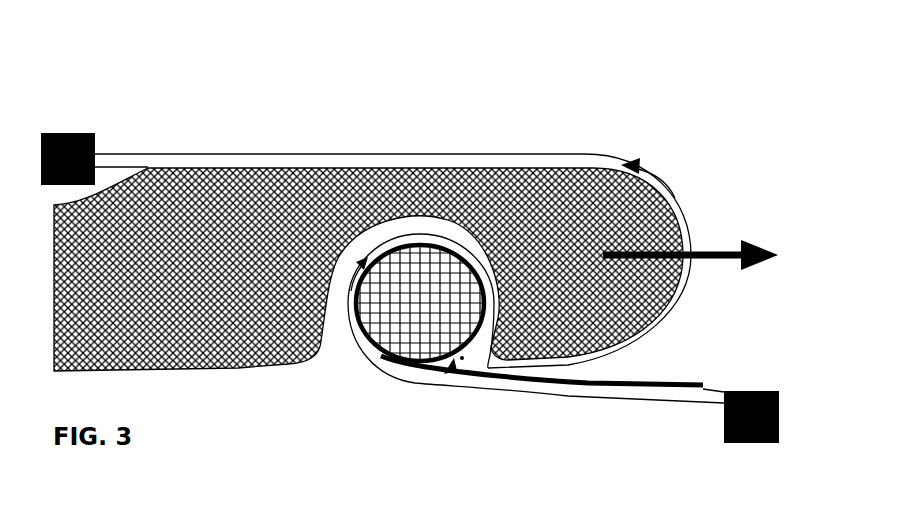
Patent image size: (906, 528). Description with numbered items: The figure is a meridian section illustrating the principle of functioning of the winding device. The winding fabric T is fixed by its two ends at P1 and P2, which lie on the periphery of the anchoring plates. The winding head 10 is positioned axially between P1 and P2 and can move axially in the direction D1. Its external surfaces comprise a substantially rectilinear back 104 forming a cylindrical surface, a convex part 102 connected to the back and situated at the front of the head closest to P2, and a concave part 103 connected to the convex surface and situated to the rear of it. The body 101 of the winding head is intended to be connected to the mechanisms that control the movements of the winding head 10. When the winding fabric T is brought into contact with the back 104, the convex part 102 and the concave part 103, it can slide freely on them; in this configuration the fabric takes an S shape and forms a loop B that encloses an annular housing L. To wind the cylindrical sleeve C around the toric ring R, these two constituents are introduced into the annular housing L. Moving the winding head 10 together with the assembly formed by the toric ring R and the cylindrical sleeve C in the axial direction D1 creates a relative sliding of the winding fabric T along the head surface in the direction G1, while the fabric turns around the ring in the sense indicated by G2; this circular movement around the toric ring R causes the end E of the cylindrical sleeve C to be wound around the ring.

The first fixing end P1 is at (64, 125).
The second fixing end P2 is at (772, 435).
The body of the winding head 101 is at (193, 227).
The back 104 is at (258, 152).
The convex part 102 is at (670, 212).
The winding head 10 is at (348, 185).
The winding fabric T is at (425, 155).
The loop B is at (488, 237).
The concave part 103 is at (465, 237).
The toric ring R is at (400, 322).
The sliding direction G1 is at (652, 175).
The second rotation direction G2 is at (366, 263).
The axial direction D1 is at (690, 275).
The annular housing L is at (441, 365).
The end of the cylindrical sleeve E is at (454, 350).
The cylindrical sleeve C is at (600, 377).